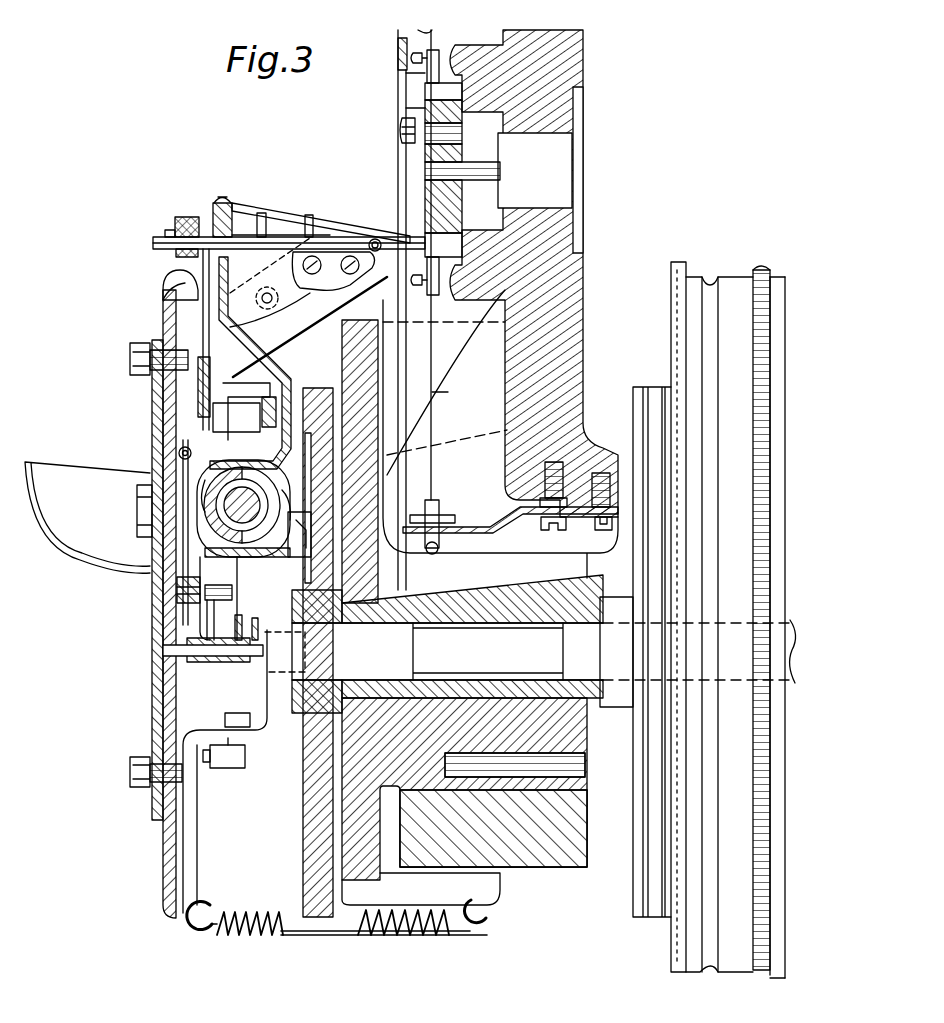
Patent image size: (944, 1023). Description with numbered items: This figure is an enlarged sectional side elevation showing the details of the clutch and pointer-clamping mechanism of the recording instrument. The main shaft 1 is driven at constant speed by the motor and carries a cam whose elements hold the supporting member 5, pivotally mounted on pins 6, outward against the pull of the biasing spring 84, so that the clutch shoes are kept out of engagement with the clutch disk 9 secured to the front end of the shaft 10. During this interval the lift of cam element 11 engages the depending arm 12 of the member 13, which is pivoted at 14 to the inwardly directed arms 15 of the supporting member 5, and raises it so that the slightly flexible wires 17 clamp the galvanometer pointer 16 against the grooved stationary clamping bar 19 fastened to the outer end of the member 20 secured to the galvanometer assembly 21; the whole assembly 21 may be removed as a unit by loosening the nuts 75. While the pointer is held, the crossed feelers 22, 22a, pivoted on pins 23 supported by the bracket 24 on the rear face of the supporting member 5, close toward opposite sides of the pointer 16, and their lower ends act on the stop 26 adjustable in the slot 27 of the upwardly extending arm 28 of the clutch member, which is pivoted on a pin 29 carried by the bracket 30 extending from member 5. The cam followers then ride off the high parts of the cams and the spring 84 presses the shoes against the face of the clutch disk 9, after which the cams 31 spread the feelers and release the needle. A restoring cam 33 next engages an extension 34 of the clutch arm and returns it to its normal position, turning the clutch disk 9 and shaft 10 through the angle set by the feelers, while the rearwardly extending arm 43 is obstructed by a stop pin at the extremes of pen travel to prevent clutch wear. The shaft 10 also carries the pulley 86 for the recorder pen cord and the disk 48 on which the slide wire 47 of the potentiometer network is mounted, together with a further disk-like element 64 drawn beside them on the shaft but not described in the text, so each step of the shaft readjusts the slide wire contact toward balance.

The main shaft 1 is at (272, 502).
The supporting member 5 is at (165, 860).
The pins 6 is at (267, 310).
The clutch disk 9 is at (303, 875).
The shaft 10 is at (400, 640).
The cam element 11 is at (250, 488).
The depending arm 12 is at (270, 380).
The member 13 is at (320, 293).
The pivot 14 is at (377, 252).
The inwardly directed arms 15 is at (300, 312).
The galvanometer pointer 16 is at (340, 243).
The wires 17 is at (205, 258).
The stationary clamping bar 19 is at (216, 204).
The member 20 is at (321, 205).
The galvanometer assembly 21 is at (590, 76).
The feeler 22 is at (152, 548).
The feeler 22a is at (170, 295).
The pin 23 is at (227, 428).
The bracket 24 is at (234, 395).
The stop 26 is at (175, 590).
The slot 27 is at (232, 598).
The upwardly extending arm 28 is at (225, 558).
The pin 29 is at (185, 658).
The bracket 30 is at (255, 725).
The cam 31 is at (209, 491).
The restoring cam 33 is at (78, 548).
The extension 34 is at (195, 748).
The rearwardly extending arm 43 is at (290, 557).
The slide wire 47 is at (762, 266).
The disk 48 is at (730, 275).
The disk 64 is at (671, 268).
The nuts 75 is at (185, 217).
The biasing spring 84 is at (250, 942).
The pulley 86 is at (637, 912).